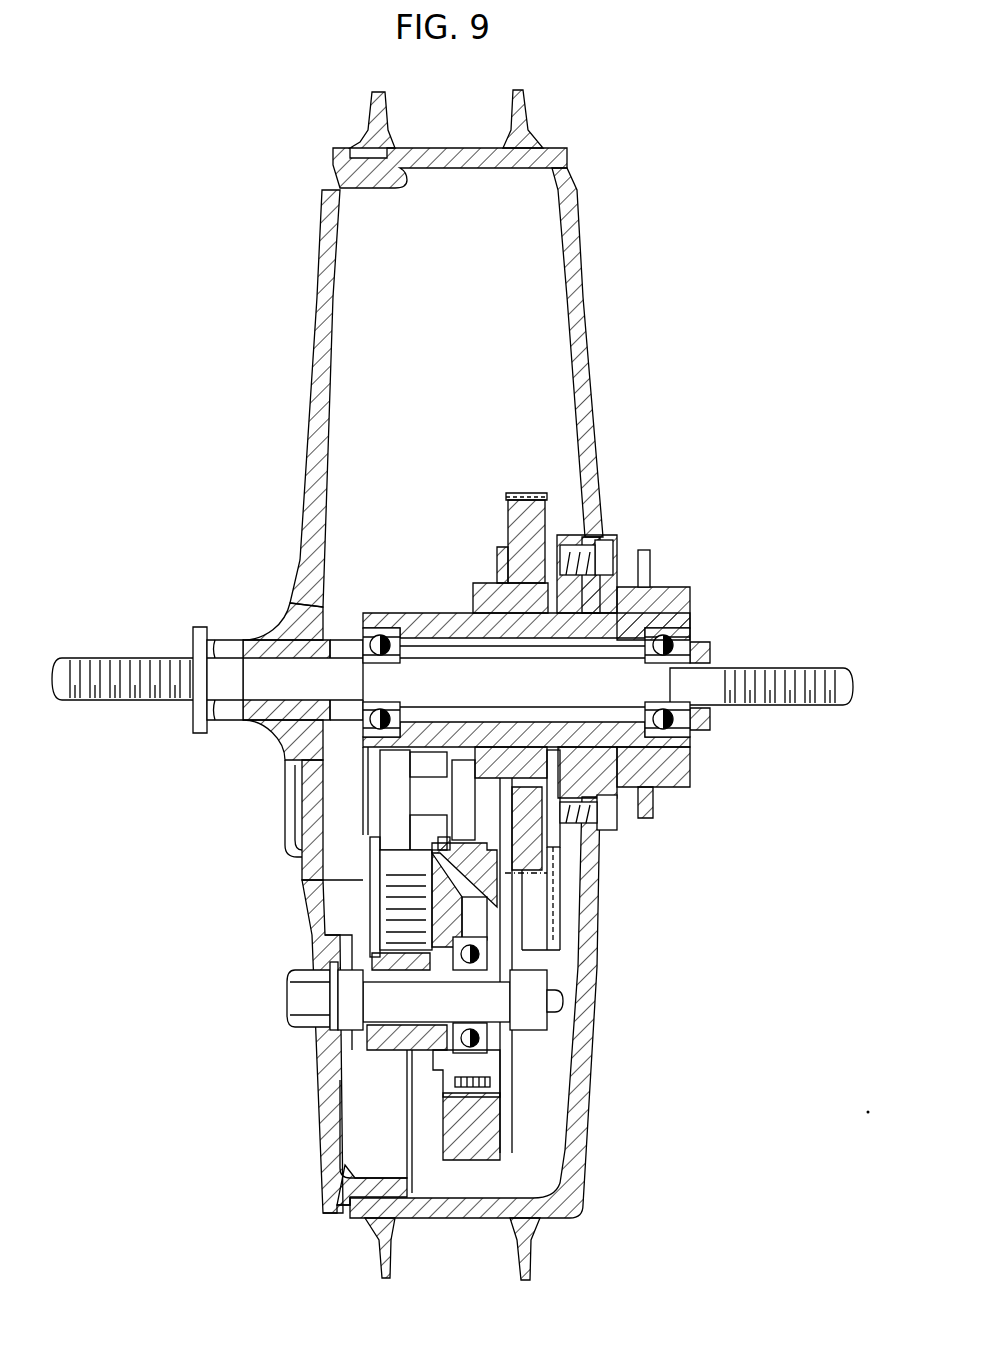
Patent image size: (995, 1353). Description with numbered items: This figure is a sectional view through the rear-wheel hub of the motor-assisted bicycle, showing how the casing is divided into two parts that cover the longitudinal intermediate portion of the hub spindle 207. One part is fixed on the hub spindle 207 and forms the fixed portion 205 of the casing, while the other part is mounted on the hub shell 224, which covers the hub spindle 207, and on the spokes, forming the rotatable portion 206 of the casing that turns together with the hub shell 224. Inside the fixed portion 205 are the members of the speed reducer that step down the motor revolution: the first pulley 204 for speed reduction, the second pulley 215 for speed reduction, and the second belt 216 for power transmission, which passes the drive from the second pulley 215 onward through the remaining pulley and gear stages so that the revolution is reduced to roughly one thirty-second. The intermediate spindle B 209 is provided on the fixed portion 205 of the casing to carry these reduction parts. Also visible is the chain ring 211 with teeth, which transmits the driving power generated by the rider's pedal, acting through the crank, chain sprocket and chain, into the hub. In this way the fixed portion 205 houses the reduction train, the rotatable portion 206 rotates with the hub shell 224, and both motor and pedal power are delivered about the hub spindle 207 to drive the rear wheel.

The first pulley 204 is at (487, 1140).
The fixed portion of the casing 205 is at (310, 520).
The rotatable portion of the casing 206 is at (583, 286).
The hub spindle 207 is at (770, 668).
The intermediate spindle B 209 is at (380, 1003).
The chain ring 211 is at (660, 585).
The second pulley 215 is at (386, 1047).
The second belt 216 is at (390, 903).
The hub shell 224 is at (434, 635).